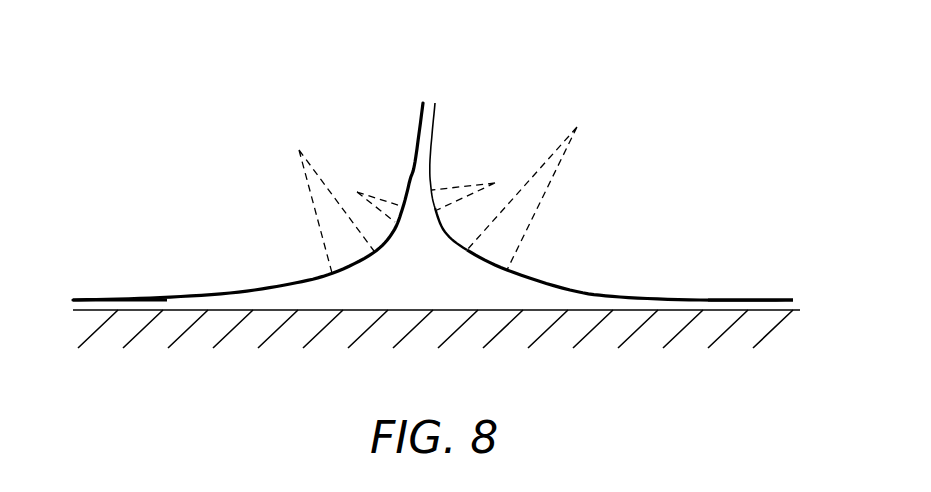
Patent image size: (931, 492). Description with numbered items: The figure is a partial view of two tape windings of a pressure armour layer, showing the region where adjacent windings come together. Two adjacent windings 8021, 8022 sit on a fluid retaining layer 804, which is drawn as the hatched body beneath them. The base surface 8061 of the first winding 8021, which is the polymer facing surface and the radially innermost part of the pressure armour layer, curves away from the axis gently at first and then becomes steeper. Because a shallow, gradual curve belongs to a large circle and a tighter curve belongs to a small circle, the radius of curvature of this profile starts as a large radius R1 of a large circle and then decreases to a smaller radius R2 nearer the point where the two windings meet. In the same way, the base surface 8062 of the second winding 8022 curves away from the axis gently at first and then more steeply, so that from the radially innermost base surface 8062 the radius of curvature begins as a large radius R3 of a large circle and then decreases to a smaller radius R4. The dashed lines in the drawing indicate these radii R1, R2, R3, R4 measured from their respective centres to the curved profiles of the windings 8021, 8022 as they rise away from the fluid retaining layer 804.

The first adjacent winding 8021 is at (212, 208).
The second adjacent winding 8022 is at (690, 208).
The fluid retaining layer 804 is at (455, 384).
The base surface of first winding 8061 is at (167, 300).
The base surface of second winding 8062 is at (708, 300).
The large radius of curvature R1 is at (328, 211).
The smaller radius of curvature R2 is at (379, 197).
The large radius of curvature R3 is at (522, 198).
The smaller radius of curvature R4 is at (463, 185).